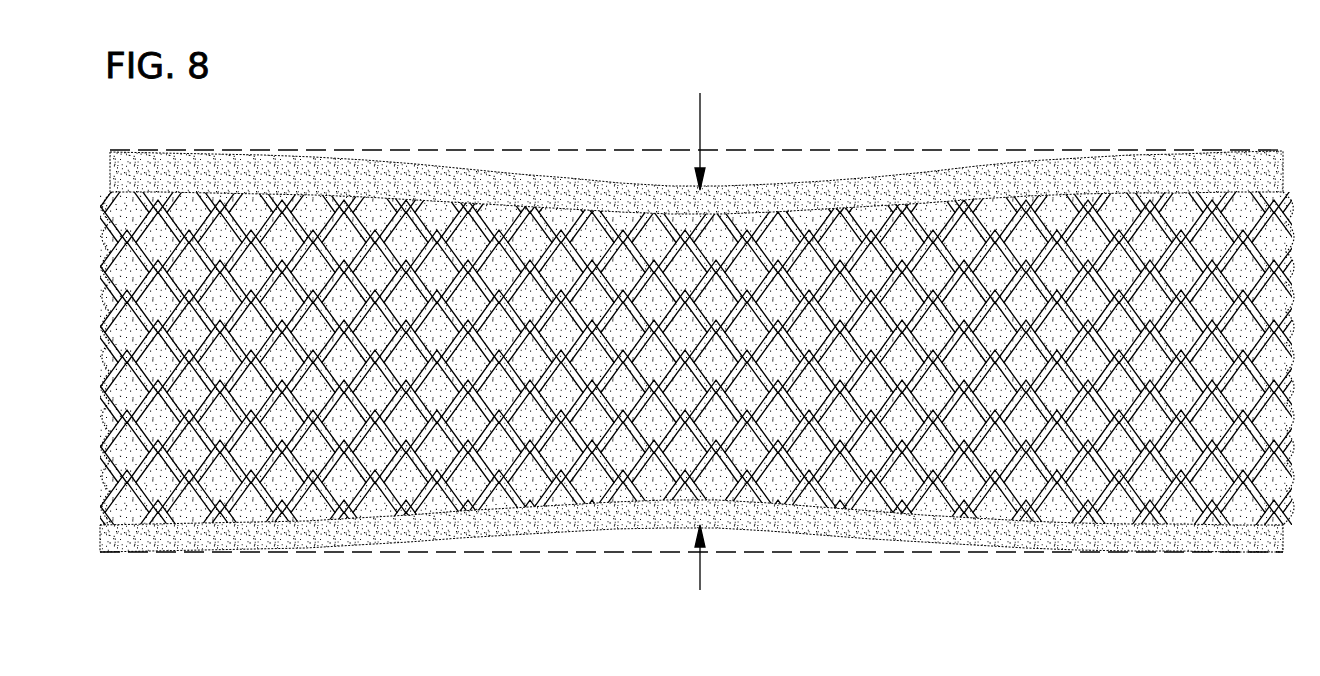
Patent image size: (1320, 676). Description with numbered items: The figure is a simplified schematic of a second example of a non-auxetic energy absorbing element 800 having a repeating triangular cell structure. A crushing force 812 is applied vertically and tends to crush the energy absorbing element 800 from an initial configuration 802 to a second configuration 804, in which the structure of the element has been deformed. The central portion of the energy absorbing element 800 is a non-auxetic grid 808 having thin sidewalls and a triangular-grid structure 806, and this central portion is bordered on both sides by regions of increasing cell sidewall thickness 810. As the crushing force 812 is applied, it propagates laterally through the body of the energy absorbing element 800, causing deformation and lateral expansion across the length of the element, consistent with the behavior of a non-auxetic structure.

The non-auxetic energy absorbing element 800 is at (1043, 98).
The initial configuration 802 is at (813, 150).
The second configuration 804 is at (903, 158).
The triangular-grid structure 806 is at (477, 440).
The non-auxetic grid 808 is at (738, 395).
The regions of increasing cell sidewall thickness 810 is at (125, 380).
The crushing force 812 is at (698, 112).